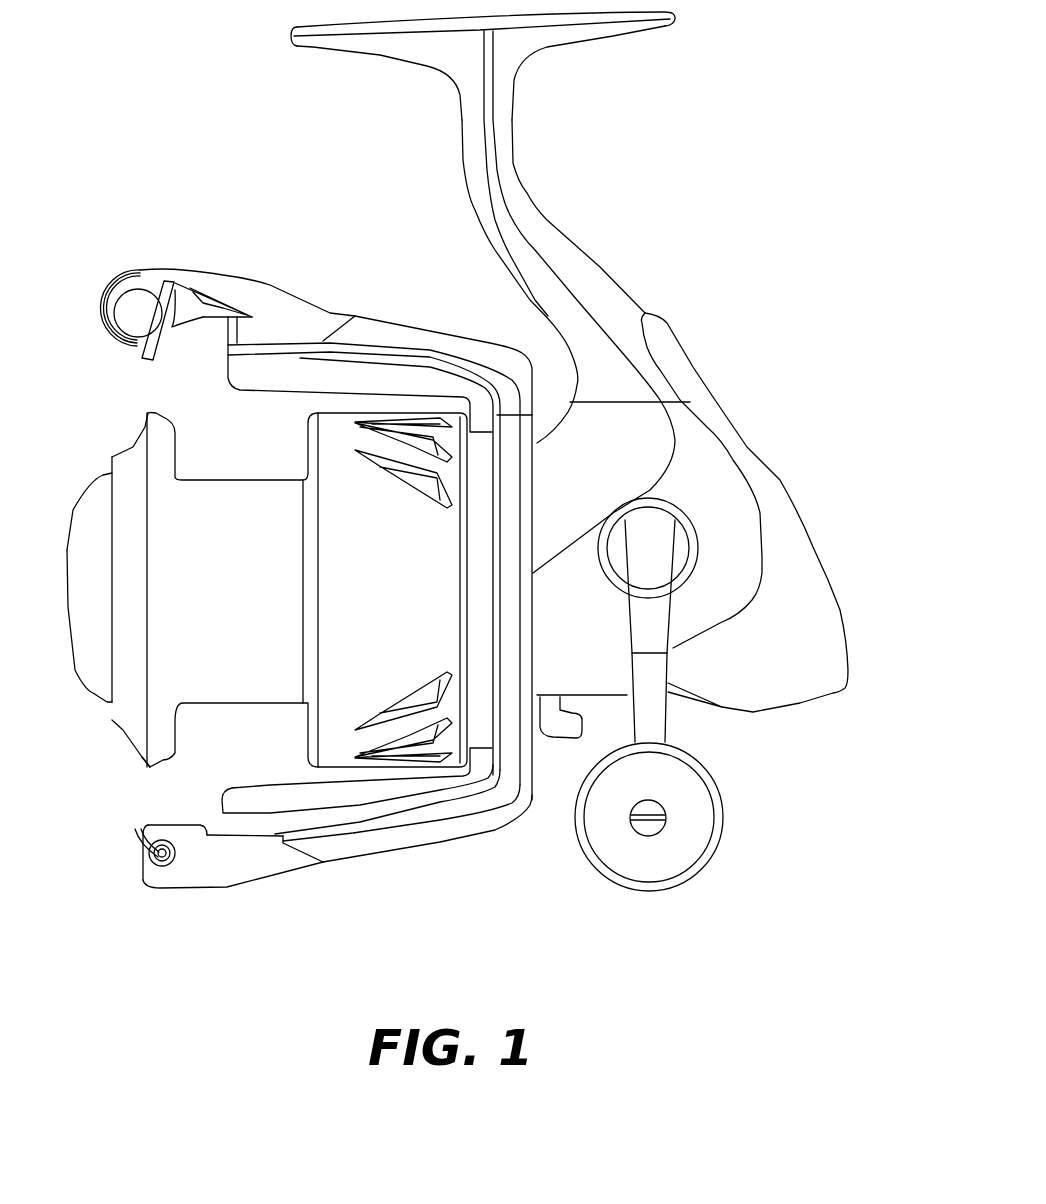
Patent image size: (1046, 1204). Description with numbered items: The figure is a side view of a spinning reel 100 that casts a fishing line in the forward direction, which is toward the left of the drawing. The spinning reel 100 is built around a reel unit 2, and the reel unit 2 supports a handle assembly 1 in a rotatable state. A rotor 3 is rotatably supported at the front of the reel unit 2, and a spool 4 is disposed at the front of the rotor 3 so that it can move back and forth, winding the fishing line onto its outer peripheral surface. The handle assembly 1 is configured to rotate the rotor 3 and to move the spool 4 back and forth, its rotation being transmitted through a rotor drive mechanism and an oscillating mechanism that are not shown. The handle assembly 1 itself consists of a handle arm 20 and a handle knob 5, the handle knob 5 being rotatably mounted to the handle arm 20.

The spinning reel 100 is at (457, 518).
The handle assembly 1 is at (700, 761).
The reel unit 2 is at (569, 375).
The rotor 3 is at (316, 541).
The spool 4 is at (267, 564).
The handle knob 5 is at (635, 862).
The handle arm 20 is at (721, 650).